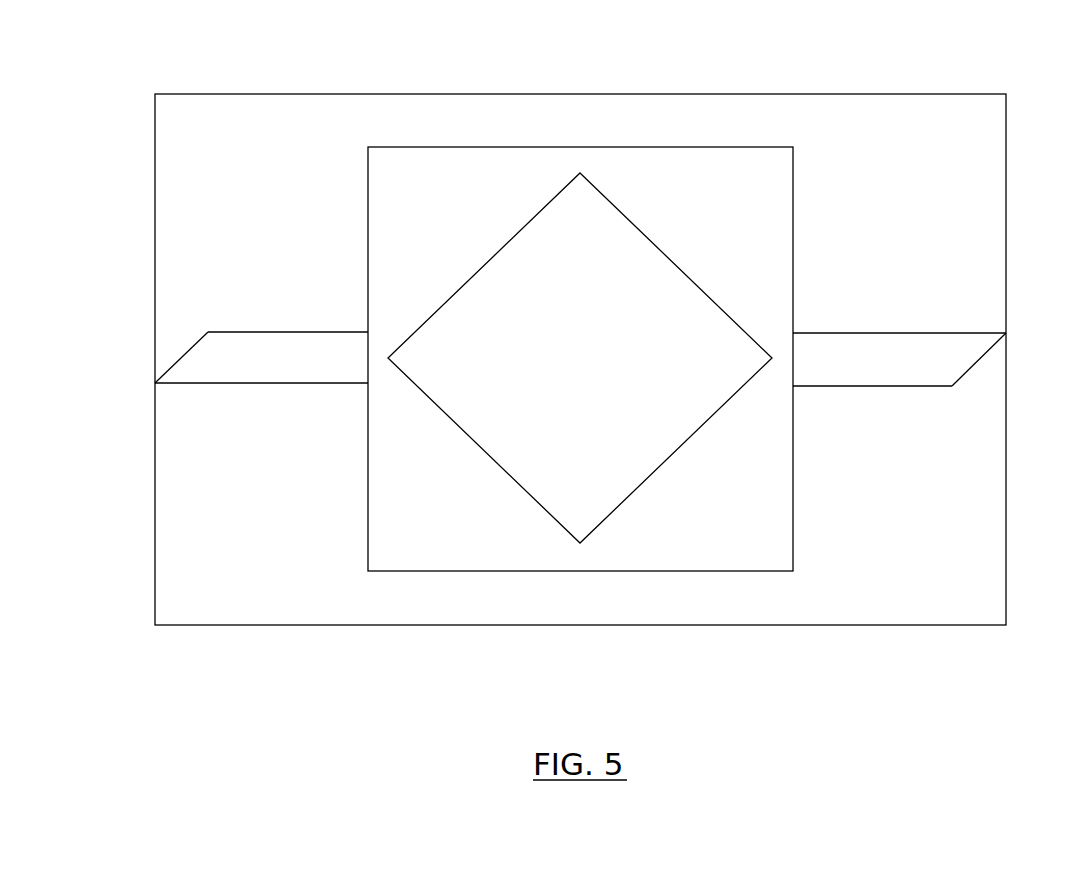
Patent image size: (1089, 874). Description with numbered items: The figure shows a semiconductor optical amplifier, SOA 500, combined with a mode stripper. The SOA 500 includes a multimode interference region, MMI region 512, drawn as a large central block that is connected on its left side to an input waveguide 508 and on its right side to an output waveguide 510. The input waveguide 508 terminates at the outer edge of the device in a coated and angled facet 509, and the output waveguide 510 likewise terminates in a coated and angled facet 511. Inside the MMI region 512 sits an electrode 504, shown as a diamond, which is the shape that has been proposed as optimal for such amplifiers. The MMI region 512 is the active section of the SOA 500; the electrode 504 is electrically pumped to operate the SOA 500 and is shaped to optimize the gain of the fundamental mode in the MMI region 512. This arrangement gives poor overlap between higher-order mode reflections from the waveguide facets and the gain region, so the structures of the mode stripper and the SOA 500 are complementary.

The SOA 500 is at (952, 95).
The electrode 504 is at (557, 370).
The input waveguide 508 is at (224, 347).
The coated and angled facet 509 is at (144, 347).
The output waveguide 510 is at (937, 375).
The coated and angled facet 511 is at (1016, 375).
The multimode interference (MMI) region 512 is at (423, 244).